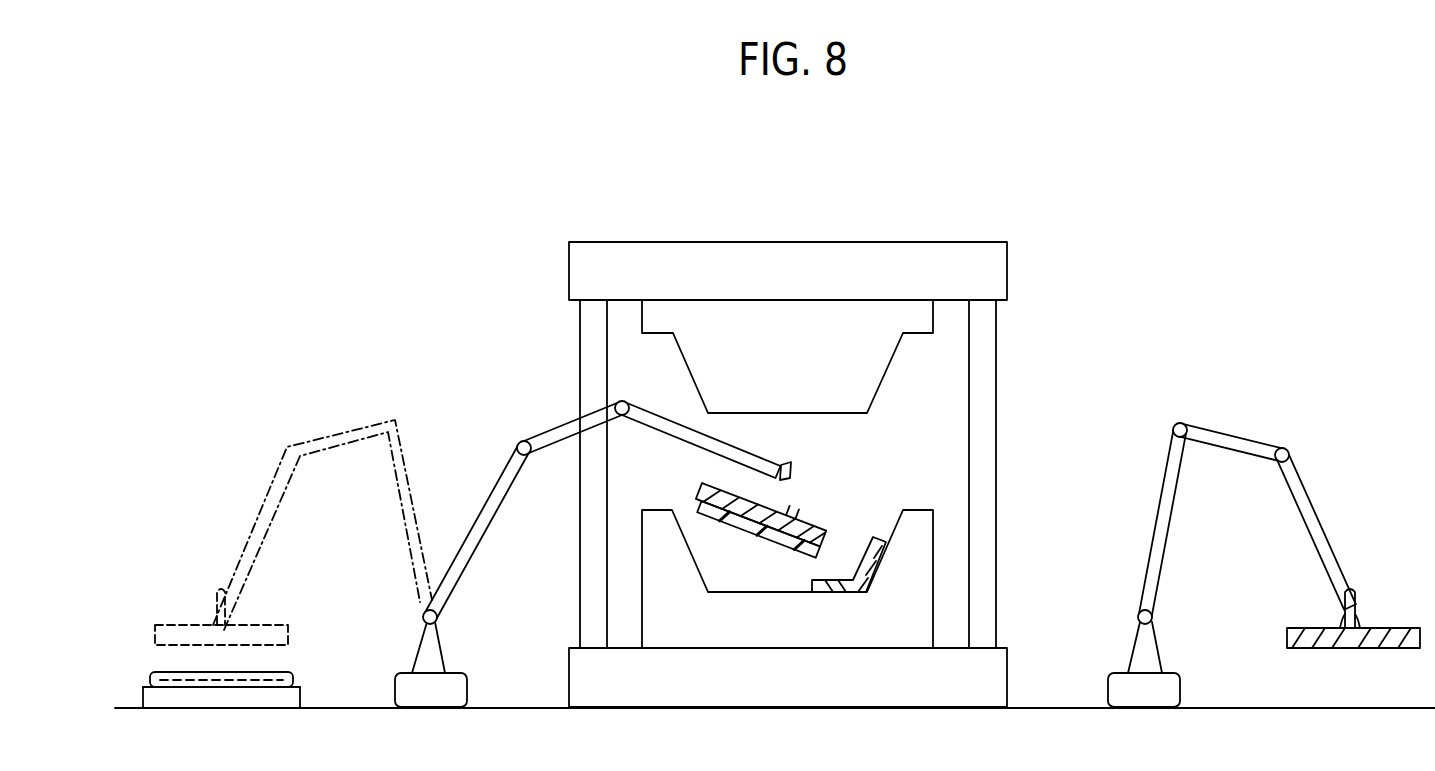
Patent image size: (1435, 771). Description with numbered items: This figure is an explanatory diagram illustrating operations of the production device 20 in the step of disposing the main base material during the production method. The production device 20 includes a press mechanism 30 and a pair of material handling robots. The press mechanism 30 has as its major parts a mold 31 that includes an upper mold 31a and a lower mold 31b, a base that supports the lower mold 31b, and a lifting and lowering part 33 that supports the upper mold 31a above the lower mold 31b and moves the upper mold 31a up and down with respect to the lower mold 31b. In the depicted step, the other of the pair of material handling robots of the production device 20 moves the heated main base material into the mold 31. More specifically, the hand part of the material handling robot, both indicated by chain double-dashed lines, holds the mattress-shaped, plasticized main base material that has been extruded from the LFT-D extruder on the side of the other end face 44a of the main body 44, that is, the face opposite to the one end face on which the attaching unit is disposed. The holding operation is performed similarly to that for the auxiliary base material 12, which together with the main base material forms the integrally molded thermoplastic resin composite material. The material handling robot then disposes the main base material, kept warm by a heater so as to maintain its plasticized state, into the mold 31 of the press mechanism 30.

The auxiliary base material 12 is at (843, 588).
The production device 20 is at (1122, 145).
The press mechanism 30 is at (834, 191).
The mold 31 is at (883, 474).
The upper mold 31a is at (887, 375).
The lower mold 31b is at (918, 622).
The lifting and lowering part 33 is at (990, 270).
The main body 44 is at (196, 646).
The other end face 44a is at (171, 650).